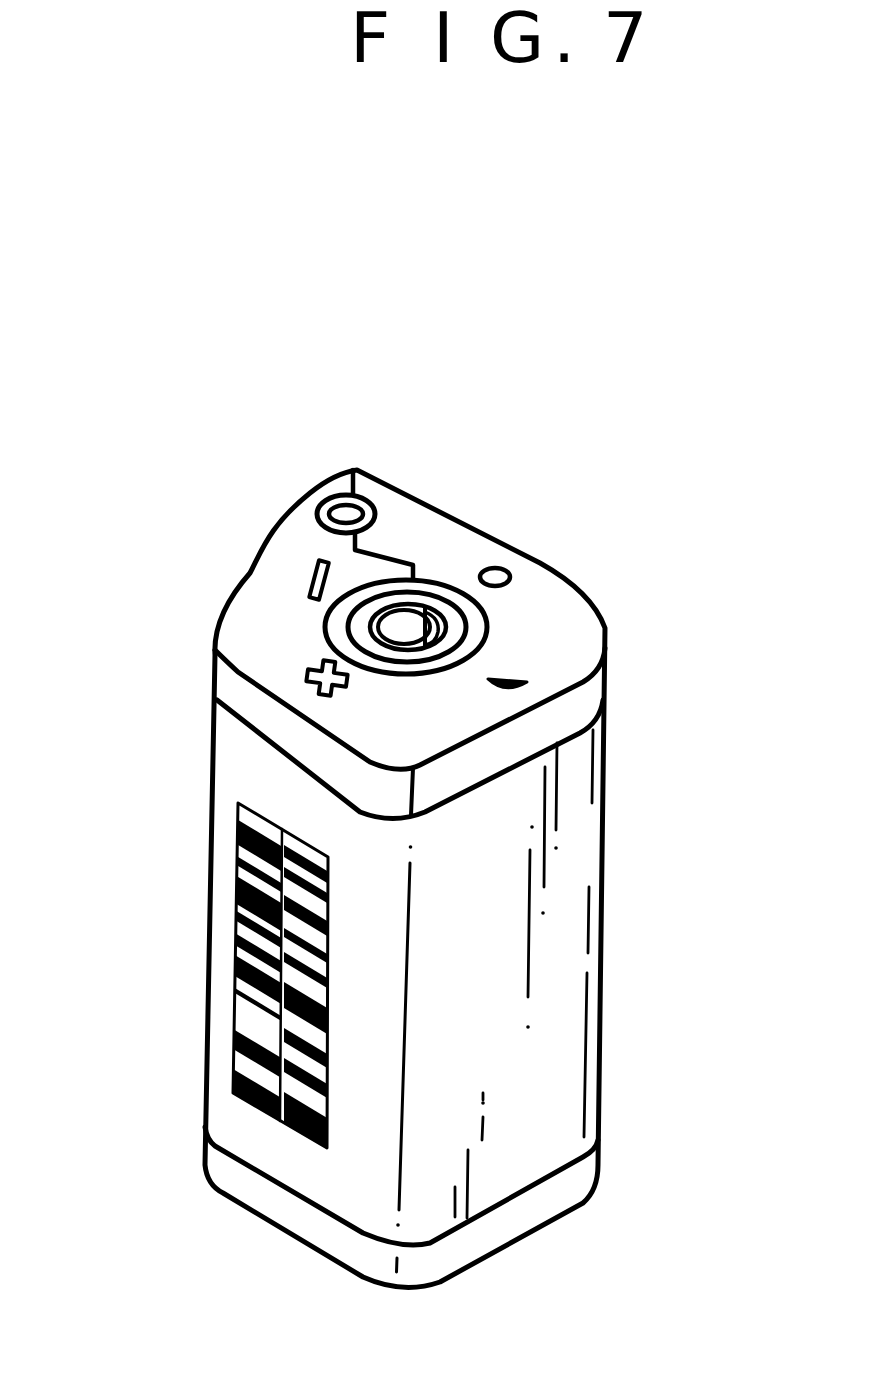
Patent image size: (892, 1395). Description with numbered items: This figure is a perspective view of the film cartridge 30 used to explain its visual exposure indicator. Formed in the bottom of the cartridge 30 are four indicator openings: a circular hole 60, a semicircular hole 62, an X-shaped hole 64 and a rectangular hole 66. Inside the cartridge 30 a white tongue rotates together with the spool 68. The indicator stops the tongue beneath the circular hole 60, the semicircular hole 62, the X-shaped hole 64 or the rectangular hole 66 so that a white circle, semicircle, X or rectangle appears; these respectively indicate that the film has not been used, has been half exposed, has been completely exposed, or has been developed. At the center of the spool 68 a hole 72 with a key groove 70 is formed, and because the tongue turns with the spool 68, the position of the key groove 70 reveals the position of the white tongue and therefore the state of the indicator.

The cartridge 30 is at (364, 455).
The circular hole 60 is at (508, 569).
The semicircular hole 62 is at (527, 682).
The X-shaped hole 64 is at (305, 677).
The rectangular hole 66 is at (311, 575).
The spool 68 is at (463, 637).
The key groove 70 is at (452, 622).
The hole 72 is at (397, 630).